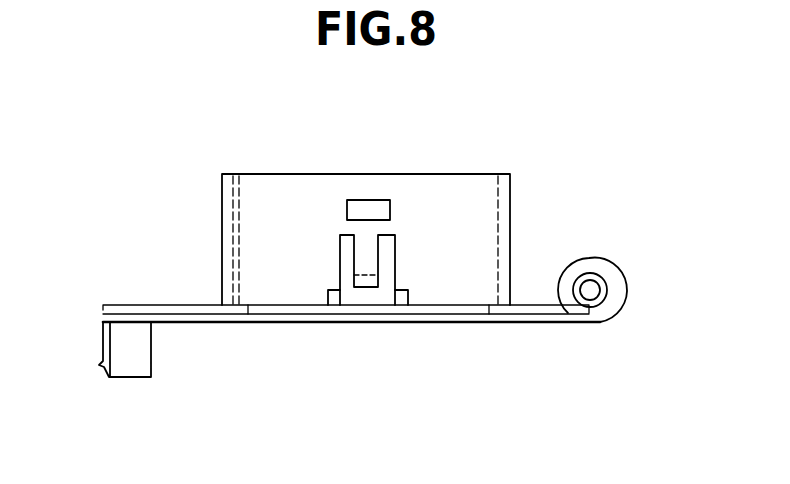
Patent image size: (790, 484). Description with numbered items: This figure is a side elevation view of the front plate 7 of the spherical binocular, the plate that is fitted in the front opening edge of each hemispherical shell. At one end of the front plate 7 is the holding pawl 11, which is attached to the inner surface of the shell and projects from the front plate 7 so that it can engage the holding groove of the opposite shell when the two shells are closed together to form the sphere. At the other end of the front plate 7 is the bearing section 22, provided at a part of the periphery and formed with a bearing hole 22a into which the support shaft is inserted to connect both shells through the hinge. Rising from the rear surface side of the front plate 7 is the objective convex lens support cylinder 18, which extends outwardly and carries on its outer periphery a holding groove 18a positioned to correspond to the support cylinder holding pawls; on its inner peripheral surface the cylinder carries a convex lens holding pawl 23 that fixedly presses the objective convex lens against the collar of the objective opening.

The front plate 7 is at (450, 316).
The holding pawl 11 is at (102, 369).
The objective convex lens support cylinder 18 is at (490, 207).
The holding groove 18a is at (374, 209).
The bearing section 22 is at (607, 273).
The bearing hole 22a is at (593, 293).
The convex lens holding pawl 23 is at (365, 263).